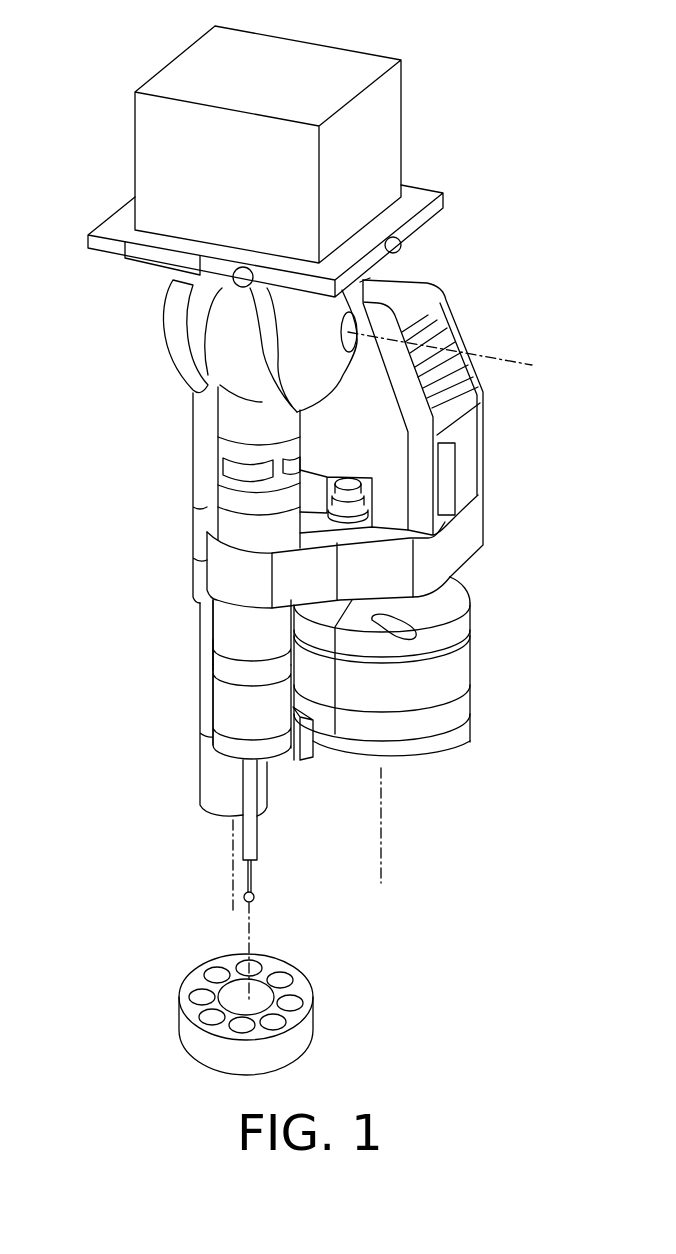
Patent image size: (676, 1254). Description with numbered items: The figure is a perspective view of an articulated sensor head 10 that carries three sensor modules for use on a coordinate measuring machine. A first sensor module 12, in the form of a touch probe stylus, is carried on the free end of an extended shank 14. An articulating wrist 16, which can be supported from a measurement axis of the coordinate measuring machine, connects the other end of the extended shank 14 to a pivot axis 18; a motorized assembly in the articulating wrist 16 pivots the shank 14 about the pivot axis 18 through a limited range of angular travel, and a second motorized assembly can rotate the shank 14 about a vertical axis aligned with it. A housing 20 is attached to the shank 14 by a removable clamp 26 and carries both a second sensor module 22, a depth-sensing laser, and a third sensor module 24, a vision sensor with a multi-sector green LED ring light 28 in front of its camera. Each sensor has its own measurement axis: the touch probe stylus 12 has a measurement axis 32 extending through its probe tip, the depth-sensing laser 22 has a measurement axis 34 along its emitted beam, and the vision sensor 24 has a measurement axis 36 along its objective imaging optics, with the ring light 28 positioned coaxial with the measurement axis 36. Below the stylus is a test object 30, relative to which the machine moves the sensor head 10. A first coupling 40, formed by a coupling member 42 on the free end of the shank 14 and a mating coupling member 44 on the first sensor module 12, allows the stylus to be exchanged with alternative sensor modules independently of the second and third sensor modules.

The articulated sensor head 10 is at (104, 40).
The first sensor module 12 is at (258, 838).
The extended shank 14 is at (227, 418).
The articulating wrist 16 is at (163, 327).
The pivot axis 18 is at (512, 360).
The housing 20 is at (452, 318).
The second sensor module 22 is at (200, 777).
The third sensor module 24 is at (472, 670).
The removable clamp 26 is at (225, 578).
The ring light 28 is at (433, 750).
The test object 30 is at (180, 1005).
The measurement axis 32 is at (250, 930).
The measurement axis 34 is at (233, 876).
The measurement axis 36 is at (381, 842).
The first coupling 40 is at (198, 656).
The coupling member 42 is at (203, 645).
The mating coupling member 44 is at (213, 668).